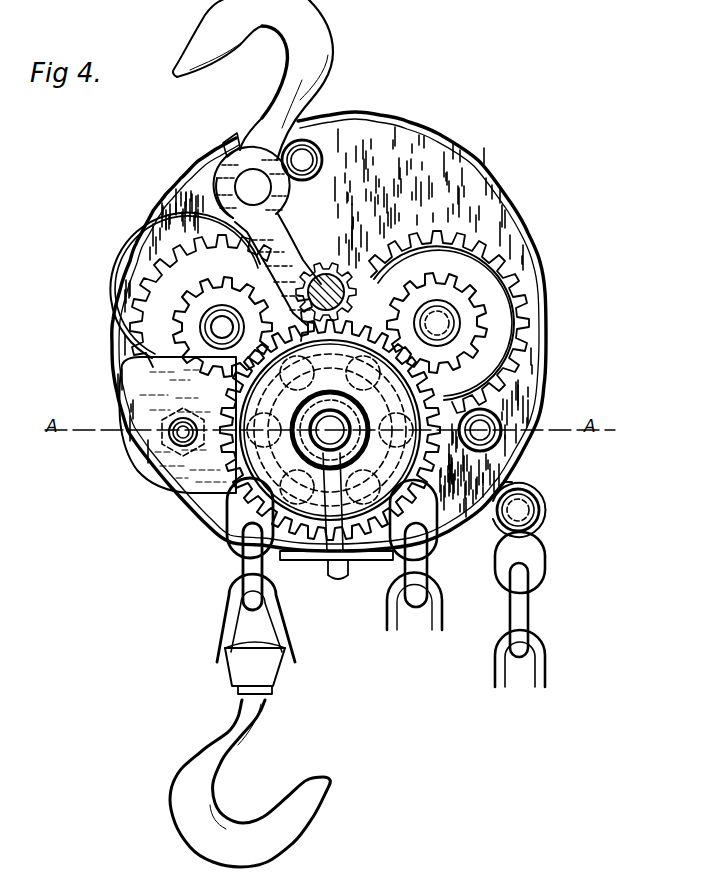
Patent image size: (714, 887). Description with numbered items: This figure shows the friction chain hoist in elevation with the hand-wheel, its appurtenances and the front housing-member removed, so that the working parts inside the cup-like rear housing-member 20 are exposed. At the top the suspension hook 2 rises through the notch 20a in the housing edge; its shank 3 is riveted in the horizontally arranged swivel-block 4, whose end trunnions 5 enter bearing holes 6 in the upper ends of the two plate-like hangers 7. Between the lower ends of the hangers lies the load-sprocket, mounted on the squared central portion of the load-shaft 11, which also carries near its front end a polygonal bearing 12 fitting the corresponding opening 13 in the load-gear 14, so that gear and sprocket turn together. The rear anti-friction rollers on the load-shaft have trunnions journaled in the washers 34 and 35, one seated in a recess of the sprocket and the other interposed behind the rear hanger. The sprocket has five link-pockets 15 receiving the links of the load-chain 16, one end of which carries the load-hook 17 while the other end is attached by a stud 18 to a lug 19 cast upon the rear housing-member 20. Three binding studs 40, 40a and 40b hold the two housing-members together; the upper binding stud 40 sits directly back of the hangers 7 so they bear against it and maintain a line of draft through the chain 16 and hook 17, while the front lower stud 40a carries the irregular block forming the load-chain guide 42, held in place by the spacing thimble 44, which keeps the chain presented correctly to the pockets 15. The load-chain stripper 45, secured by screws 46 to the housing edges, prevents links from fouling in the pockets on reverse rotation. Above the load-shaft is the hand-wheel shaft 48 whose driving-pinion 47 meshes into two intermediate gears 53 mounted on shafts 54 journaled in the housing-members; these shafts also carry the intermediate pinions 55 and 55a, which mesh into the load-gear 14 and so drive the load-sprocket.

The top or suspension hook 2 is at (253, 80).
The shank 3 is at (220, 166).
The swivel-block 4 is at (232, 186).
The trunnions 5 is at (253, 187).
The bearing holes 6 is at (232, 199).
The plate-like hangers 7 is at (245, 252).
The load-shaft 11 is at (368, 500).
The polygonal bearing 12 is at (342, 493).
The opening 13 is at (324, 480).
The load-gear 14 is at (294, 560).
The link-pockets 15 is at (383, 543).
The load-chain 16 is at (230, 548).
The load-hook 17 is at (250, 720).
The stud 18 is at (530, 510).
The lug 19 is at (512, 476).
The rear housing-member 20 is at (187, 502).
The notch 20a is at (244, 124).
The washer 34 is at (330, 430).
The washer 35 is at (237, 479).
The upper binding stud 40 is at (306, 157).
The front binding stud 40a is at (172, 444).
The binding stud 40b is at (503, 418).
The load-chain guide 42 is at (143, 397).
The spacing thimble 44 is at (163, 438).
The load-chain stripper 45 is at (348, 562).
The screws 46 is at (358, 580).
The driving-pinion 47 is at (418, 198).
The hand-wheel shaft 48 is at (330, 272).
The intermediate gears 53 is at (312, 306).
The shafts 54 is at (208, 328).
The intermediate pinion 55 is at (222, 306).
The intermediate pinion 55a is at (449, 322).